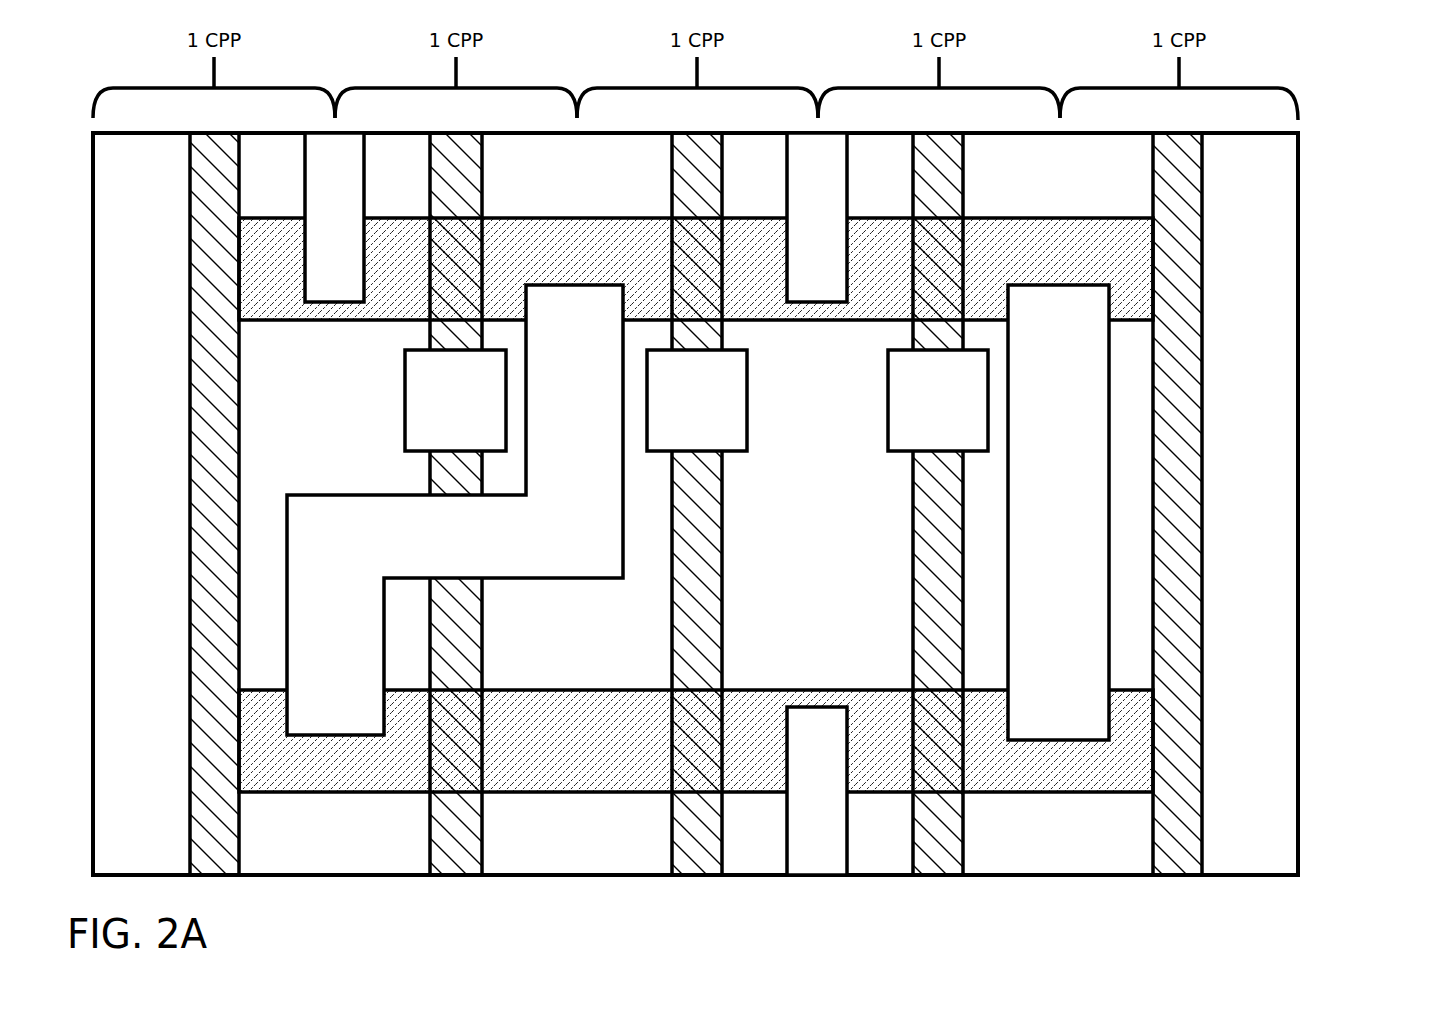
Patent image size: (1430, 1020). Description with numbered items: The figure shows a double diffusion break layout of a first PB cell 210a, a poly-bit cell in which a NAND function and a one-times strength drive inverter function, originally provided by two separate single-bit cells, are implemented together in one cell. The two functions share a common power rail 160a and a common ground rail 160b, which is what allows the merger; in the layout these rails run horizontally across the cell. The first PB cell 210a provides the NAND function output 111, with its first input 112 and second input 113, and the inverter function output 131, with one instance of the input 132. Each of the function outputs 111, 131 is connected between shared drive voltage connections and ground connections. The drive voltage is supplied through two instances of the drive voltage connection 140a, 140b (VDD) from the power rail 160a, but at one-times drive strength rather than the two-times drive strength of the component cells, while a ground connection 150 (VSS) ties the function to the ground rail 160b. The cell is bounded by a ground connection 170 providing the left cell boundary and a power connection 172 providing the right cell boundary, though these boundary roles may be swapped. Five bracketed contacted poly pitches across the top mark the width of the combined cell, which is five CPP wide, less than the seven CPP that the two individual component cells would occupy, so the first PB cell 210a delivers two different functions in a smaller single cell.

The first PB cell 210a is at (1334, 237).
The NAND function output 111 is at (455, 510).
The first input 112 is at (455, 400).
The second input 113 is at (697, 400).
The inverter function output 131 is at (1058, 512).
The input 132 is at (938, 400).
The drive voltage connection 140a is at (341, 218).
The drive voltage connection 140b is at (826, 218).
The ground connection 150 is at (817, 857).
The power rail 160a is at (612, 218).
The ground rail 160b is at (610, 690).
The ground connection 170 is at (190, 515).
The power connection 172 is at (1192, 468).